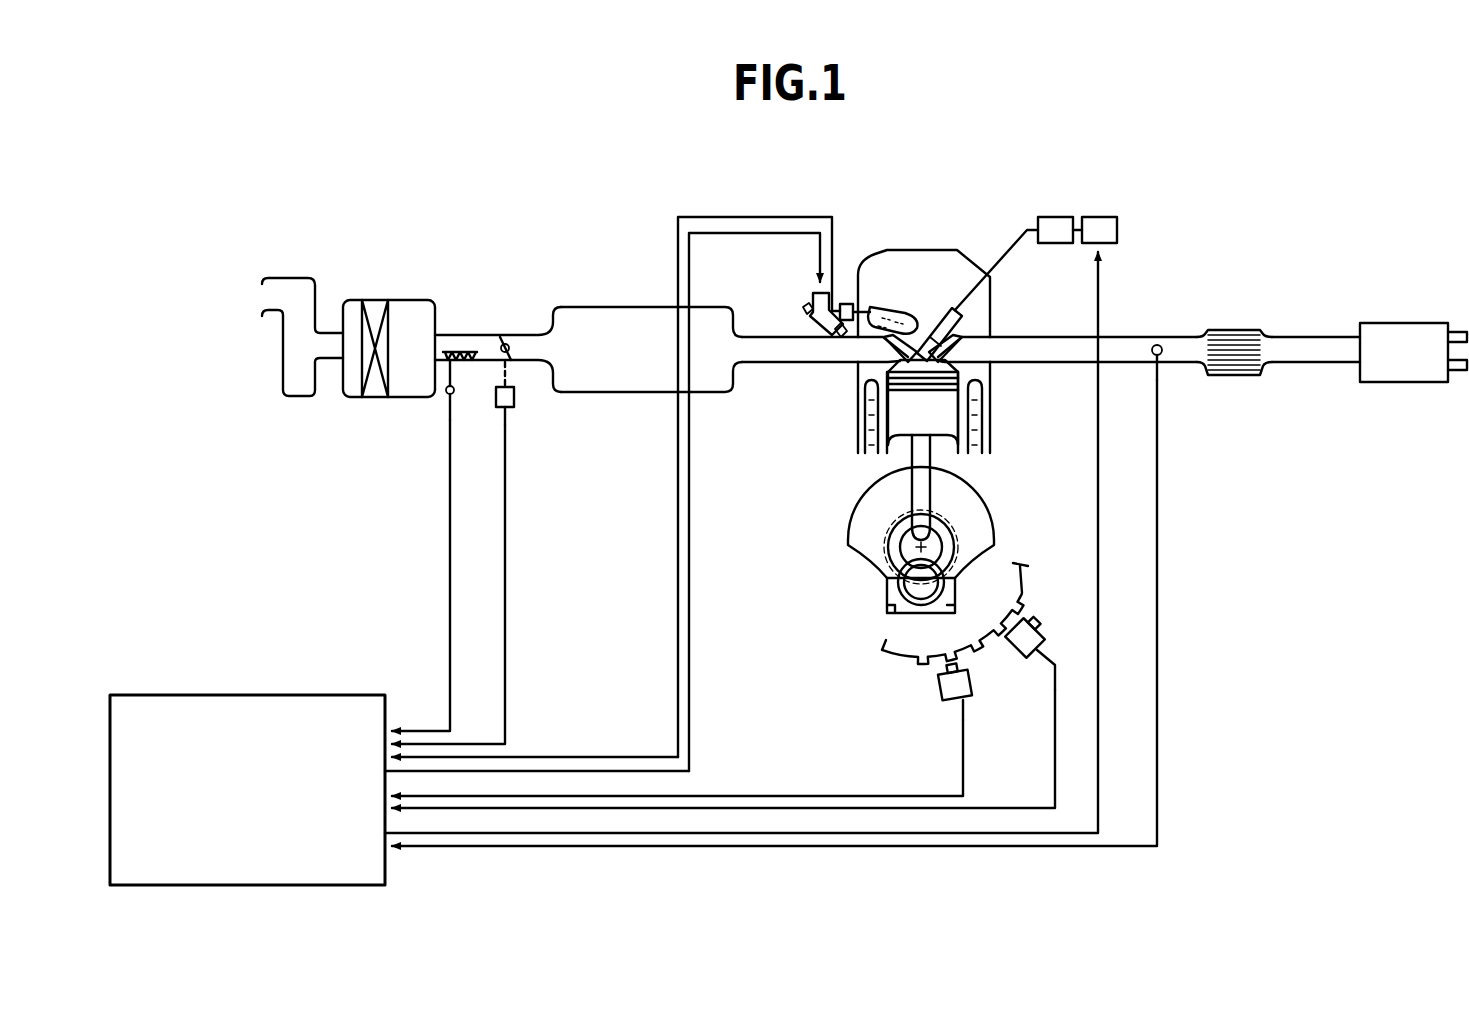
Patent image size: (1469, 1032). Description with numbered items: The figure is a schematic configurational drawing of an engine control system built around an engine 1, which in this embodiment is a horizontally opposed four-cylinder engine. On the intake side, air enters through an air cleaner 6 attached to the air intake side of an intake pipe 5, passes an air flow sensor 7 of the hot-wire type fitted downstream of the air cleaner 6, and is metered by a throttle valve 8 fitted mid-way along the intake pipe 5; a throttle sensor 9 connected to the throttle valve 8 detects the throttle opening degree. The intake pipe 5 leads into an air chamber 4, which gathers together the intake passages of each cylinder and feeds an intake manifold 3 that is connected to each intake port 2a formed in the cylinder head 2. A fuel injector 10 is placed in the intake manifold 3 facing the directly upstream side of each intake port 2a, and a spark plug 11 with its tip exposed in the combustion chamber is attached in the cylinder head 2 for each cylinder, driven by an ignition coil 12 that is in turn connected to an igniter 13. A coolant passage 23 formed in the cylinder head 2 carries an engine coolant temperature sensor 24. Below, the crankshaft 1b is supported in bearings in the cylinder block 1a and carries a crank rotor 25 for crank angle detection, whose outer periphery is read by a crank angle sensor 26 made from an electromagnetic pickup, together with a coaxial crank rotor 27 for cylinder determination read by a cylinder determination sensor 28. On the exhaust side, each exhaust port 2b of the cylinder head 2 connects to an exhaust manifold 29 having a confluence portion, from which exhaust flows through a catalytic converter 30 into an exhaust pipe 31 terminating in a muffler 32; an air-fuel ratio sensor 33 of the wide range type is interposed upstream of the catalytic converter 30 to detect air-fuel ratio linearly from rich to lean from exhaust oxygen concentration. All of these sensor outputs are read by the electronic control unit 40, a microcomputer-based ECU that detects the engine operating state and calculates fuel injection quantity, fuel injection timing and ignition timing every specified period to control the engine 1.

The engine 1 is at (924, 240).
The cylinder block 1a is at (857, 447).
The crankshaft 1b is at (953, 530).
The cylinder head 2 is at (990, 317).
The intake port 2a is at (860, 360).
The exhaust port 2b is at (982, 343).
The intake manifold 3 is at (768, 363).
The air chamber 4 is at (616, 310).
The intake pipe 5 is at (532, 335).
The air cleaner 6 is at (366, 303).
The air flow sensor 7 is at (457, 350).
The throttle valve 8 is at (506, 343).
The throttle sensor 9 is at (514, 397).
The fuel injector 10 is at (811, 325).
The spark plug 11 is at (960, 318).
The ignition coil 12 is at (1057, 217).
The igniter 13 is at (1110, 217).
The coolant passage 23 is at (893, 307).
The engine coolant temperature sensor 24 is at (847, 300).
The crank rotor for crank angle detection 25 is at (1033, 590).
The crank angle sensor 26 is at (1017, 657).
The crank rotor for cylinder determination 27 is at (940, 664).
The cylinder determination sensor 28 is at (945, 705).
The exhaust manifold 29 is at (1123, 367).
The catalytic converter 30 is at (1232, 328).
The exhaust pipe 31 is at (1283, 367).
The muffler 32 is at (1410, 382).
The air-fuel ratio sensor 33 is at (1157, 345).
The electronic control unit 40 is at (240, 695).